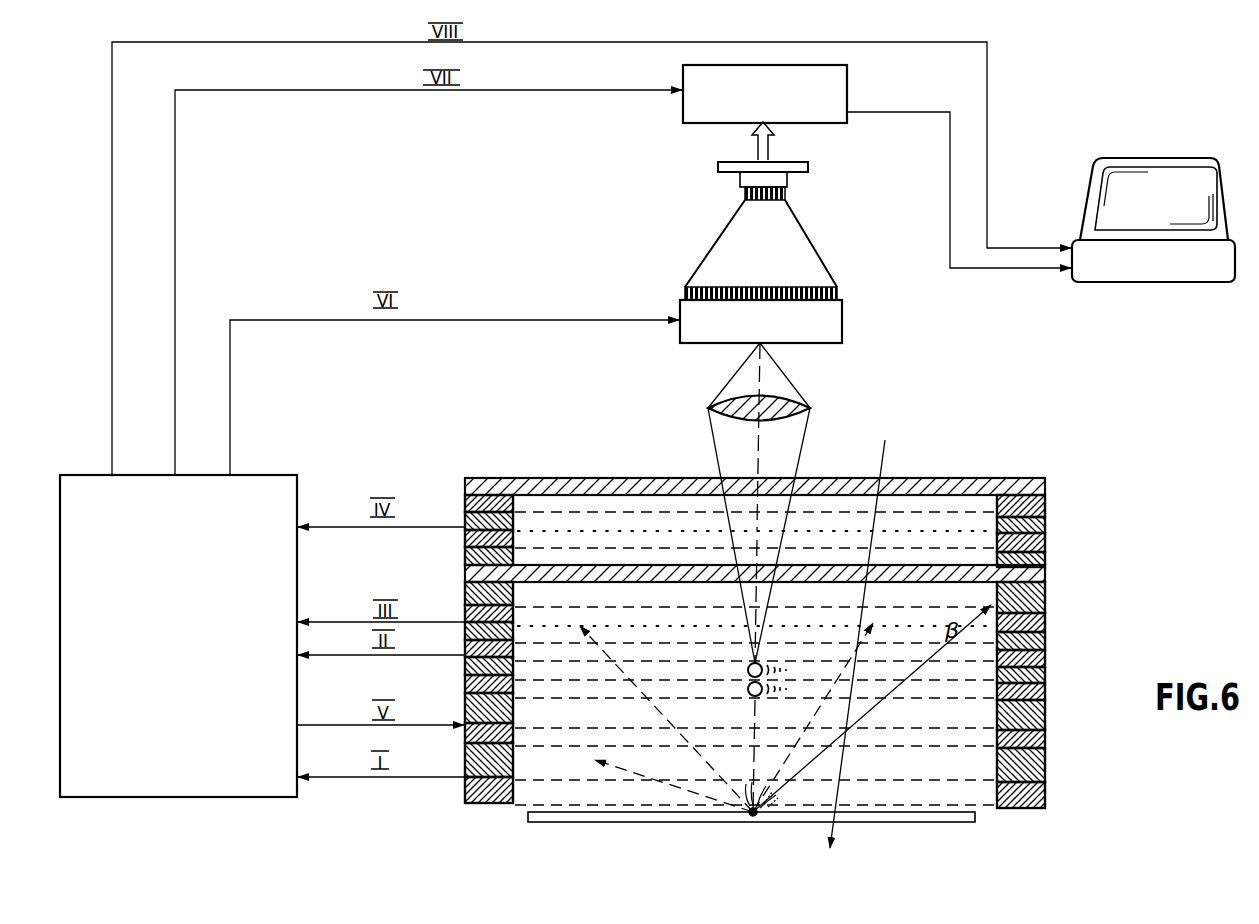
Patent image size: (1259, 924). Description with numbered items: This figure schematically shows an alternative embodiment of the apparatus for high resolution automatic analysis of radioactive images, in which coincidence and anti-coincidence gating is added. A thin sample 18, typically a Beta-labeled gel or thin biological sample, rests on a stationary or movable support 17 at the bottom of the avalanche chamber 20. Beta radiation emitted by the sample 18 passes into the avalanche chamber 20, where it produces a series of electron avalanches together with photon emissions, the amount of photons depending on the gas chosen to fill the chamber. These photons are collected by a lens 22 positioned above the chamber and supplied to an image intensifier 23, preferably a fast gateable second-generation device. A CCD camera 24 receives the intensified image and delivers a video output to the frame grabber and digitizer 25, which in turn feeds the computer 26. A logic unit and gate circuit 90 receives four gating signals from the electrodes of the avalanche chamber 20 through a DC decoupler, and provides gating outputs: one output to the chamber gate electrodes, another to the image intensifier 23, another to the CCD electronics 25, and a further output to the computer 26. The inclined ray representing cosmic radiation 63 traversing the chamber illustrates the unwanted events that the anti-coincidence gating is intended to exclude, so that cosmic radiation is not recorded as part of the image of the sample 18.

The support 17 is at (955, 822).
The sample 18 is at (743, 813).
The avalanche chamber 20 is at (1138, 603).
The lens 22 is at (810, 410).
The image intensifier 23 is at (832, 318).
The CCD camera 24 is at (808, 168).
The frame grabber and digitizer 25 is at (847, 100).
The computer 26 is at (1170, 282).
The cosmic radiation 63 is at (838, 826).
The logic unit and gate circuit 90 is at (260, 497).